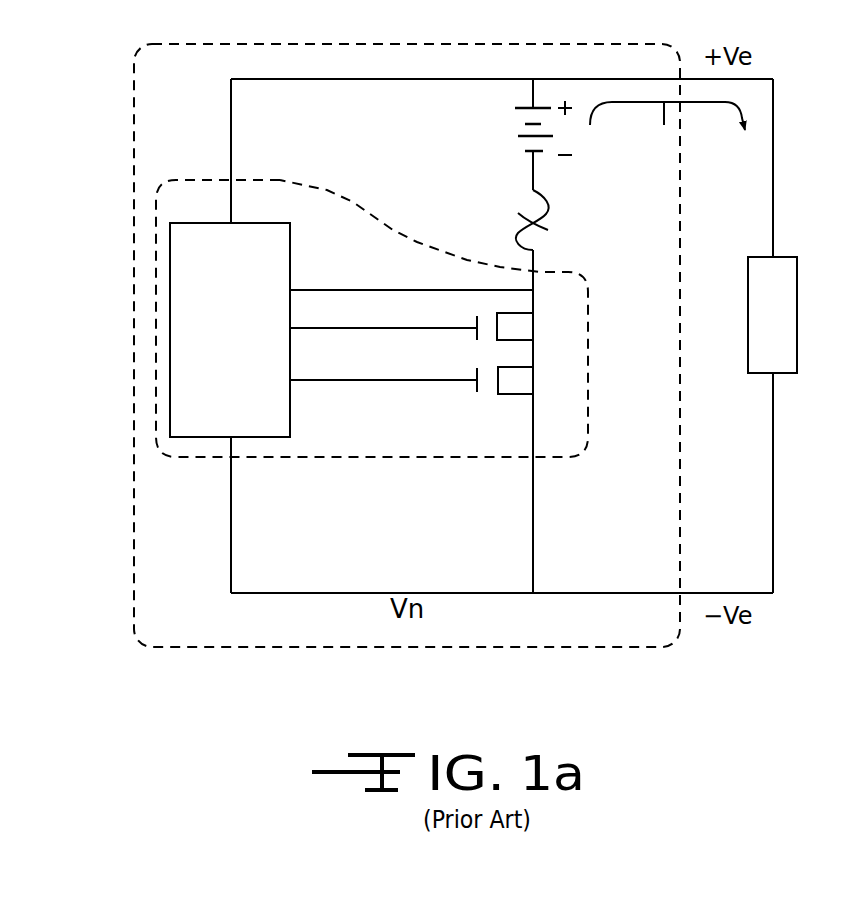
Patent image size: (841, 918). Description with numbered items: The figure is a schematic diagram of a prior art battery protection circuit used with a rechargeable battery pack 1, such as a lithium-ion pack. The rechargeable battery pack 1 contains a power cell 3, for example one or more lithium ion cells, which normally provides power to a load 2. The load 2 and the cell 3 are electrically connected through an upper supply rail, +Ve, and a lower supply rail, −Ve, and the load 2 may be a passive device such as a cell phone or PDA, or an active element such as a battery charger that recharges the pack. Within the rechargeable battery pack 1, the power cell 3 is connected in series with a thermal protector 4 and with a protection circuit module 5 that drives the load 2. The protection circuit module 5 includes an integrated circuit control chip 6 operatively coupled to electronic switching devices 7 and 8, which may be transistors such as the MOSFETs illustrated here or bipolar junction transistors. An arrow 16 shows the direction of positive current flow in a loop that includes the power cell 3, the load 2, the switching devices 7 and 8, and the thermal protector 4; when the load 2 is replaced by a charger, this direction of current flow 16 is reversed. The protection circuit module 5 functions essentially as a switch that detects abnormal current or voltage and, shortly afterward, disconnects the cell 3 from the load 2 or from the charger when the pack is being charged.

The rechargeable battery pack 1 is at (393, 43).
The load 2 is at (797, 300).
The power cell 3 is at (519, 136).
The thermal protector 4 is at (511, 222).
The protection circuit module 5 is at (315, 190).
The integrated circuit control chip 6 is at (292, 268).
The electronic switching device 7 is at (505, 327).
The electronic switching device 8 is at (506, 380).
The arrow 16 is at (667, 127).